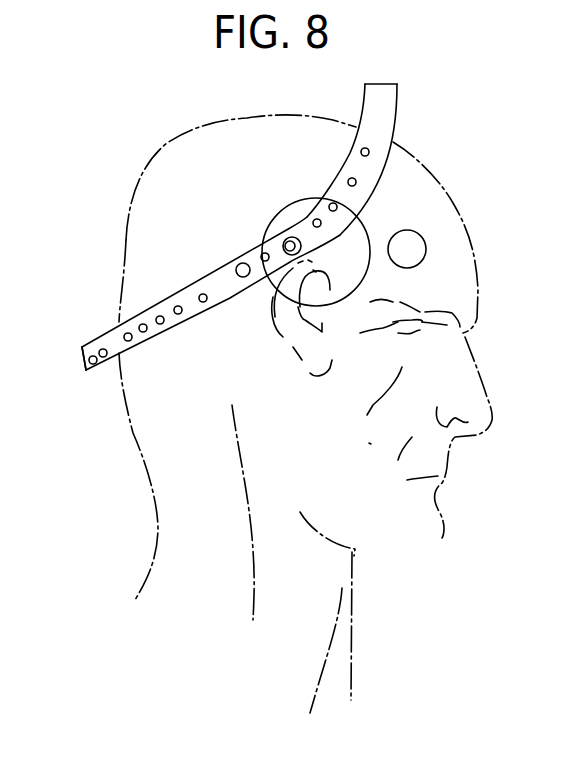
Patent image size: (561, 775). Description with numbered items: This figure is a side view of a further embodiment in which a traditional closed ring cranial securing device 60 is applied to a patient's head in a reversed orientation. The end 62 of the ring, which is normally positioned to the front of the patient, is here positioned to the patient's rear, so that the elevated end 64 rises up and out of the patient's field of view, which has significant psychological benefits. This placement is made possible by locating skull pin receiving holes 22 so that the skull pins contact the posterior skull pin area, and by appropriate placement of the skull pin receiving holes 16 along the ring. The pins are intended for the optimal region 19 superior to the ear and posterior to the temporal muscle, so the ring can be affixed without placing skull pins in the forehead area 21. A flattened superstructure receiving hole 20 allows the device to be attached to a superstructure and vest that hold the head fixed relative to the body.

The skull pin receiving holes 16 is at (361, 152).
The region 19 is at (363, 222).
The superstructure receiving hole 20 is at (300, 247).
The area 21 is at (426, 244).
The skull pin receiving holes 22 is at (103, 358).
The closed ring cranial securing device 60 is at (220, 270).
The end 62 is at (85, 347).
The elevated end 64 is at (390, 103).